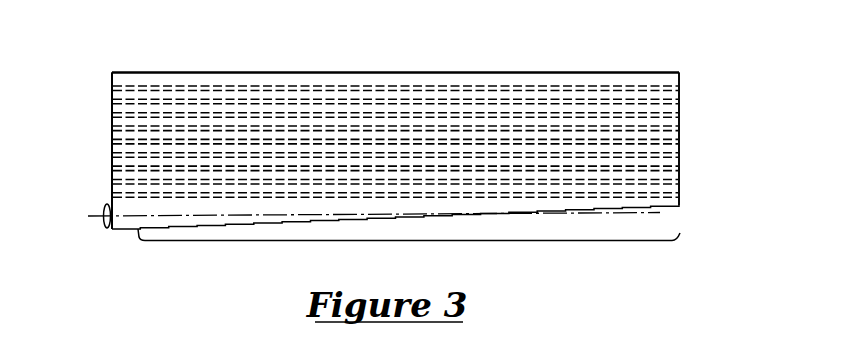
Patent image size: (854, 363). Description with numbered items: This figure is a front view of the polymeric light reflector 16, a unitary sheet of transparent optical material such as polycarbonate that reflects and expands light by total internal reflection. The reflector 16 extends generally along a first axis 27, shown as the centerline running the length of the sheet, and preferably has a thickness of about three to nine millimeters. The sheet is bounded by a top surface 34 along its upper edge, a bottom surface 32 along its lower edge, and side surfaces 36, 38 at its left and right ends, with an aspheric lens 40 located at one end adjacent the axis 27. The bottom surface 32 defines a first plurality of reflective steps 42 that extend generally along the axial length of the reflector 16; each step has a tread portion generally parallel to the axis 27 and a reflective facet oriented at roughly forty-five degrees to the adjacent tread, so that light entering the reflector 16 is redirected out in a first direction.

The polymeric light reflector 16 is at (640, 64).
The first axis 27 is at (100, 212).
The bottom surface 32 is at (128, 232).
The top surface 34 is at (220, 72).
The side surface 36 is at (111, 80).
The side surface 38 is at (680, 82).
The aspheric lens 40 is at (105, 228).
The reflective steps 42 is at (411, 242).